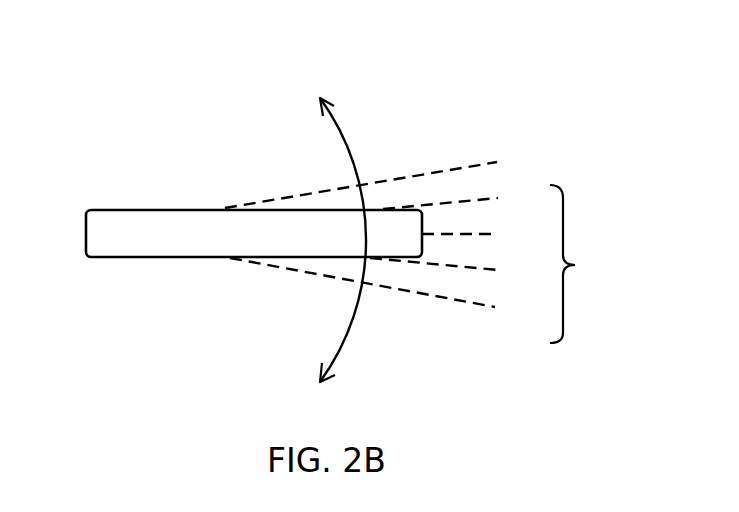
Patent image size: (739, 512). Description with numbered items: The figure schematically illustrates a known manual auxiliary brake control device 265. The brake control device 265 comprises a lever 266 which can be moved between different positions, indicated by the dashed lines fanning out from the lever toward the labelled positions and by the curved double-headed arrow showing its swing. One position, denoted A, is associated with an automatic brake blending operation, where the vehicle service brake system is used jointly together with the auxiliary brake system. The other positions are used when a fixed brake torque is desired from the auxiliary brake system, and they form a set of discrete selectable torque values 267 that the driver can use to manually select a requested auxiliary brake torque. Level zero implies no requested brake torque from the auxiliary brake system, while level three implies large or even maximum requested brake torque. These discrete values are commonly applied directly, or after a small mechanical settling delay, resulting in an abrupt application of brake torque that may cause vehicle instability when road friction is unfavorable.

The manual auxiliary brake control device 265 is at (105, 121).
The lever 266 is at (198, 258).
The set of discrete selectable torque values 267 is at (576, 265).